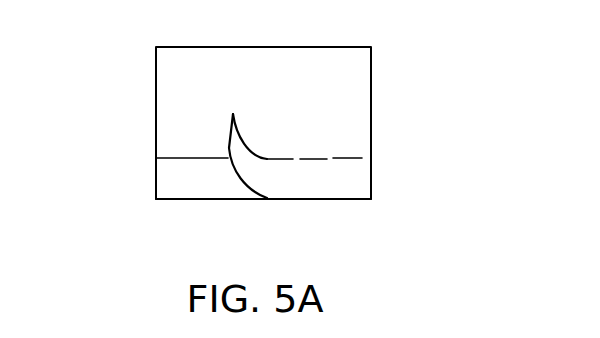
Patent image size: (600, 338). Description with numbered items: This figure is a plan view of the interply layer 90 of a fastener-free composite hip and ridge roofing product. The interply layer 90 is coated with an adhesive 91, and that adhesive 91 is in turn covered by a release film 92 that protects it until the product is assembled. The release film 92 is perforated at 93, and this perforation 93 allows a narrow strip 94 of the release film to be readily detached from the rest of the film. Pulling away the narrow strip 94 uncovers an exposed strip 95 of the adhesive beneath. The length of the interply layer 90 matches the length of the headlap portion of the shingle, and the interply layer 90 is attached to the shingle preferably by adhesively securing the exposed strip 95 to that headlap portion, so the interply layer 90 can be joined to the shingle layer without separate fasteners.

The interply layer 90 is at (382, 73).
The adhesive 91 is at (155, 198).
The release film 92 is at (242, 62).
The perforation 93 is at (347, 158).
The narrow strip 94 is at (247, 143).
The exposed strip 95 is at (218, 183).